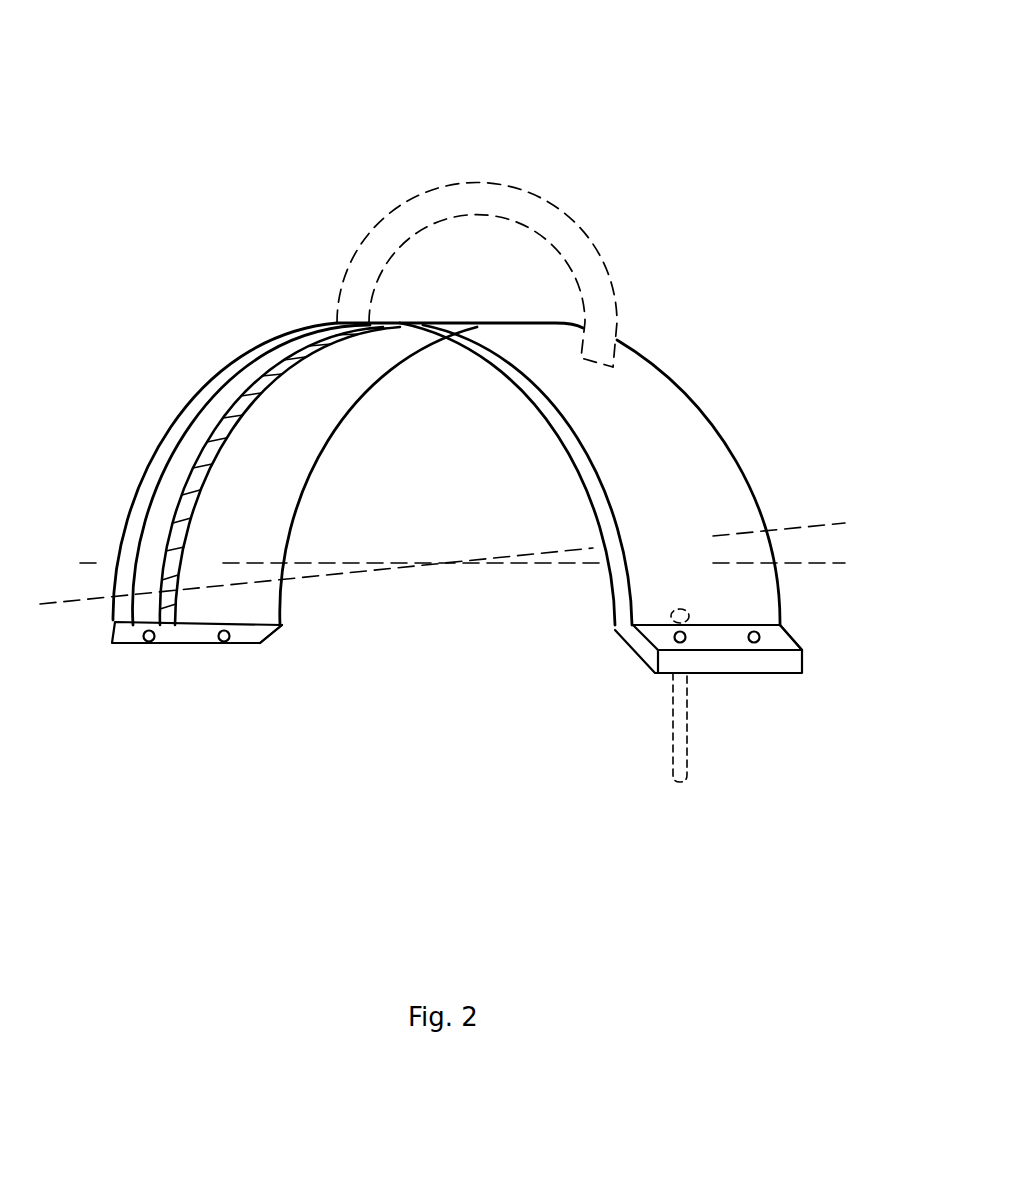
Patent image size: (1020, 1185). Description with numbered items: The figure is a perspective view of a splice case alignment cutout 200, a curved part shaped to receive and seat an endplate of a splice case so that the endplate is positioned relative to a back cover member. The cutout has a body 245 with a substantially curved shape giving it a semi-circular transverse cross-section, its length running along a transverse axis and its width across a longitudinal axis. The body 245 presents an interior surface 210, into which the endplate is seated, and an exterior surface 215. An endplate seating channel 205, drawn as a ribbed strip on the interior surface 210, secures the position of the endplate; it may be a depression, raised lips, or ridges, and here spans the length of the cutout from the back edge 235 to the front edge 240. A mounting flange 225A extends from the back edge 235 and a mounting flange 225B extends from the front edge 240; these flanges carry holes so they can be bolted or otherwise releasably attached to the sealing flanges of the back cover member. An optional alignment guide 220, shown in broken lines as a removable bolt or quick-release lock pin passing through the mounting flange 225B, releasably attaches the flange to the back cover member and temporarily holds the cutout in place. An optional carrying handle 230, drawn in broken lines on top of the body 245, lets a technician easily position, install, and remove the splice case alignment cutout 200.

The splice case alignment cutout 200 is at (706, 112).
The endplate seating channel 205 is at (210, 463).
The interior surface 210 is at (328, 503).
The exterior surface 215 is at (751, 405).
The alignment guide 220 is at (682, 723).
The mounting flange 225A is at (255, 638).
The mounting flange 225B is at (635, 638).
The carrying handle 230 is at (478, 192).
The back edge 235 is at (287, 630).
The front edge 240 is at (782, 626).
The body 245 is at (665, 405).